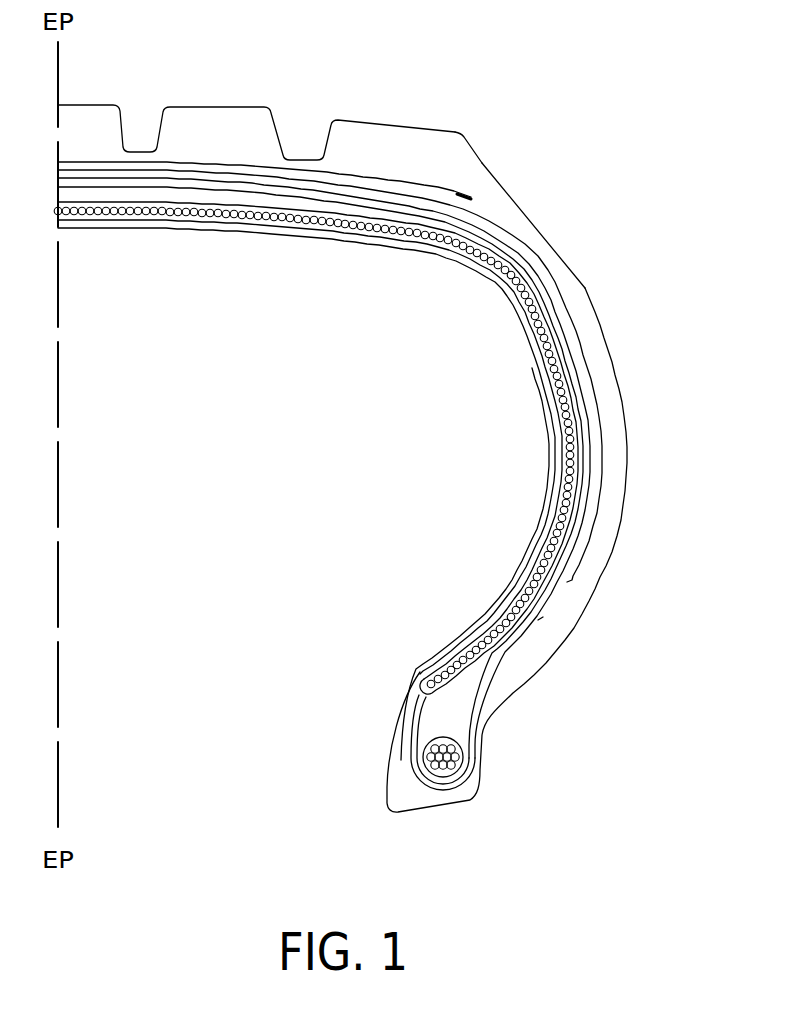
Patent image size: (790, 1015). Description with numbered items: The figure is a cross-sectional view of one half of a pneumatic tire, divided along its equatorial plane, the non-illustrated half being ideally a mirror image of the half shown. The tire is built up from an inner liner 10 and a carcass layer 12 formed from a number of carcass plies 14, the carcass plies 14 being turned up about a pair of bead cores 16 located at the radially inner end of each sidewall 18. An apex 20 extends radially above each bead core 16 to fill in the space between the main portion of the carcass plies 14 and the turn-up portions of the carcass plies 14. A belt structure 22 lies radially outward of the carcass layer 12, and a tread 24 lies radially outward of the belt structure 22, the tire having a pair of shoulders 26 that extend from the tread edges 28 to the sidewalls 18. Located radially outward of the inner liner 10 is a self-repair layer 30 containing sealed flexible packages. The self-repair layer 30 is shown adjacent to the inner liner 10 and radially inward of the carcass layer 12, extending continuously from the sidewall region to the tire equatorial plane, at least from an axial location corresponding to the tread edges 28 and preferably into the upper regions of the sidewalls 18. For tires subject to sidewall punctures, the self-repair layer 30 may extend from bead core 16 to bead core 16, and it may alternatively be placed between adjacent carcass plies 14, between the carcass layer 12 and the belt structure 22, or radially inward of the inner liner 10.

The inner liner 10 is at (563, 437).
The carcass layer 12 is at (593, 355).
The carcass plies 14 is at (598, 407).
The bead core 16 is at (448, 762).
The sidewall 18 is at (617, 468).
The apex 20 is at (453, 715).
The belt structure 22 is at (232, 173).
The tread 24 is at (193, 122).
The shoulder 26 is at (505, 222).
The tread edge 28 is at (462, 137).
The self-repair layer 30 is at (133, 221).